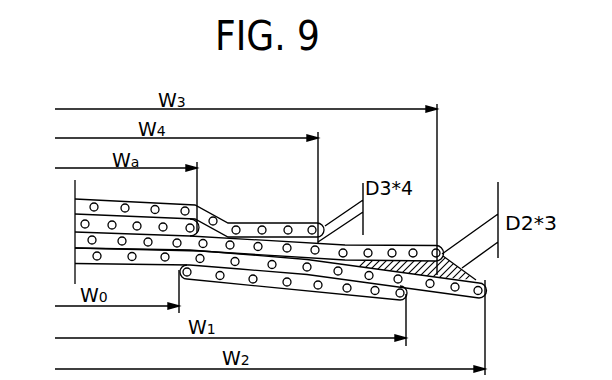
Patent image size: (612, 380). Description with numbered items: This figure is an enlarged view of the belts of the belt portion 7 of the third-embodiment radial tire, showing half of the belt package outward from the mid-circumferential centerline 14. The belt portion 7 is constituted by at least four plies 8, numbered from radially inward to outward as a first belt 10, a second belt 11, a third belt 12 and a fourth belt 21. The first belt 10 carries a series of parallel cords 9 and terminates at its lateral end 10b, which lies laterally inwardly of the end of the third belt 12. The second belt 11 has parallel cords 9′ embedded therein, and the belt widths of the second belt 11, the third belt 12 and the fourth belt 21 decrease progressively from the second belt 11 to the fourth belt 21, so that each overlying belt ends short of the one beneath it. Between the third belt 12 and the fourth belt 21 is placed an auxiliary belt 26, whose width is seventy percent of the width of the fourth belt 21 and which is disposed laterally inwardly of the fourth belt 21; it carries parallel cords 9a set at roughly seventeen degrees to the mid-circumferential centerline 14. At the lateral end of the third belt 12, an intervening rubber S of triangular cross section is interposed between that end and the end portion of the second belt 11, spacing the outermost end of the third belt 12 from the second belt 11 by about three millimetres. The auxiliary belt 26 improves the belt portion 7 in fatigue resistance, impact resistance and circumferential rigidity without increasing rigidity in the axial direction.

The belt portion 7 is at (456, 174).
The plies 8 is at (272, 283).
The parallel cords 9 is at (317, 290).
The parallel cords 9′ is at (458, 295).
The parallel cords 9a is at (138, 221).
The first belt 10 is at (178, 276).
The end of the right-hand first belt 10b is at (406, 297).
The second belt 11 is at (77, 257).
The third belt 12 is at (77, 243).
The mid-circumferential centerline 14 is at (73, 197).
The fourth belt 21 is at (75, 207).
The auxiliary belt 26 is at (75, 223).
The intervening rubber S is at (478, 277).